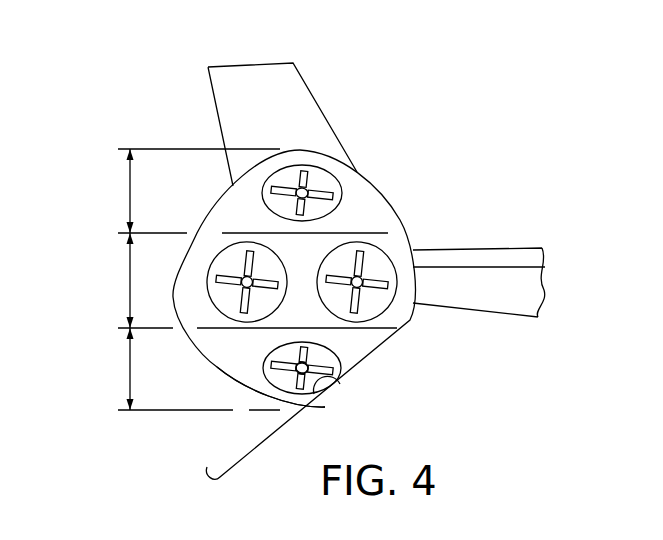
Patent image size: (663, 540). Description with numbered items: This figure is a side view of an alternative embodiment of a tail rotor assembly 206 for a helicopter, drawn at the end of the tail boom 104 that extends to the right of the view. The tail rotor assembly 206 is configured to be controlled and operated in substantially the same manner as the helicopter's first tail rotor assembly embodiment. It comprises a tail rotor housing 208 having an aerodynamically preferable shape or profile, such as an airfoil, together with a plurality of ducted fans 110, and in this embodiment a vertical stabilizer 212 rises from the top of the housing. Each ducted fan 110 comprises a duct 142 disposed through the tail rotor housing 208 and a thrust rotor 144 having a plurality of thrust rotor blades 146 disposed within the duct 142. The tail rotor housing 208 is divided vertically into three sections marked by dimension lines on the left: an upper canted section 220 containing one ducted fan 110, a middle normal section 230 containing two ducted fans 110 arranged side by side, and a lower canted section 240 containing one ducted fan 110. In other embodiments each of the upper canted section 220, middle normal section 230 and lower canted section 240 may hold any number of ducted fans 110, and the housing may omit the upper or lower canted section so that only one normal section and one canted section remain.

The tail boom 104 is at (483, 248).
The ducted fan 110 is at (322, 155).
The duct 142 is at (338, 381).
The thrust rotor 144 is at (321, 357).
The thrust rotor blades 146 is at (260, 398).
The tail rotor assembly 206 is at (174, 116).
The tail rotor housing 208 is at (367, 184).
The vertical stabilizer 212 is at (234, 65).
The upper canted section 220 is at (128, 192).
The middle normal section 230 is at (128, 282).
The lower canted section 240 is at (128, 367).